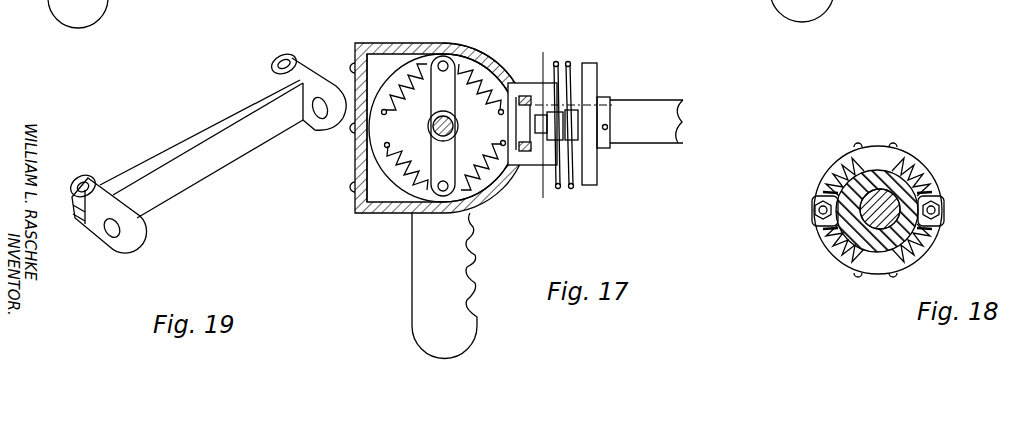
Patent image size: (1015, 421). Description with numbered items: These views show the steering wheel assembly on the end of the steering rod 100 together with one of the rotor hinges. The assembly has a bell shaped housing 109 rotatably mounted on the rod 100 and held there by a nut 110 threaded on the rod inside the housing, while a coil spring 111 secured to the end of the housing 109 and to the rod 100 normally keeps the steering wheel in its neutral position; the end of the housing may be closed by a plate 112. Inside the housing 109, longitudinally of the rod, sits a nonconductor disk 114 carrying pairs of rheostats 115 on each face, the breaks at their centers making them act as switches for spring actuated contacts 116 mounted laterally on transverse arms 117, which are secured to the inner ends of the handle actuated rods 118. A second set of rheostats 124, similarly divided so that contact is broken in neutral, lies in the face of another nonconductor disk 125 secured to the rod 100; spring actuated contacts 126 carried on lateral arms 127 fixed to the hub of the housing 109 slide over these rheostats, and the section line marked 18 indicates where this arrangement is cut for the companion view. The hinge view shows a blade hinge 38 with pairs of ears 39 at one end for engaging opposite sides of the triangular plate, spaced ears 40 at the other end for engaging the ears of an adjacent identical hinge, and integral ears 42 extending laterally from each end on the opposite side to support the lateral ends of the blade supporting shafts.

In FIG. 19, the blade hinge 38 is at (182, 128).
In FIG. 19, the pairs of ears 39 is at (70, 197).
In FIG. 19, the spaced ears 40 is at (277, 80).
In FIG. 19, the integral ears 42 is at (320, 77).
In FIG. 17, the steering rod 100 is at (680, 104).
In FIG. 18, the steering rod 100 is at (853, 190).
In FIG. 17, the bell shaped housing 109 is at (360, 213).
In FIG. 18, the bell shaped housing 109 is at (880, 273).
In FIG. 17, the nut 110 is at (507, 73).
In FIG. 17, the coil spring 111 is at (578, 62).
In FIG. 17, the plate 112 is at (352, 168).
In FIG. 17, the nonconductor disk 114 is at (487, 197).
In FIG. 17, the rheostats 115 is at (412, 45).
In FIG. 17, the spring actuated contacts 116 is at (447, 50).
In FIG. 17, the transverse arms 117 is at (430, 97).
In FIG. 17, the handle actuated rods 118 is at (458, 126).
In FIG. 18, the rheostats 124 is at (898, 200).
In FIG. 17, the nonconductor disk 125 is at (600, 77).
In FIG. 18, the nonconductor disk 125 is at (936, 180).
In FIG. 17, the spring actuated contacts 126 is at (575, 127).
In FIG. 17, the lateral arms 127 is at (577, 187).
In FIG. 17, the section line 18- 18 is at (574, 52).